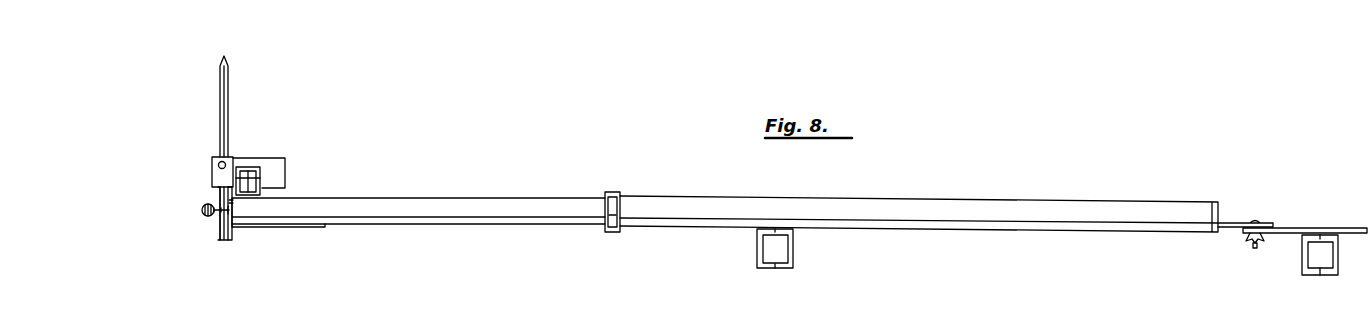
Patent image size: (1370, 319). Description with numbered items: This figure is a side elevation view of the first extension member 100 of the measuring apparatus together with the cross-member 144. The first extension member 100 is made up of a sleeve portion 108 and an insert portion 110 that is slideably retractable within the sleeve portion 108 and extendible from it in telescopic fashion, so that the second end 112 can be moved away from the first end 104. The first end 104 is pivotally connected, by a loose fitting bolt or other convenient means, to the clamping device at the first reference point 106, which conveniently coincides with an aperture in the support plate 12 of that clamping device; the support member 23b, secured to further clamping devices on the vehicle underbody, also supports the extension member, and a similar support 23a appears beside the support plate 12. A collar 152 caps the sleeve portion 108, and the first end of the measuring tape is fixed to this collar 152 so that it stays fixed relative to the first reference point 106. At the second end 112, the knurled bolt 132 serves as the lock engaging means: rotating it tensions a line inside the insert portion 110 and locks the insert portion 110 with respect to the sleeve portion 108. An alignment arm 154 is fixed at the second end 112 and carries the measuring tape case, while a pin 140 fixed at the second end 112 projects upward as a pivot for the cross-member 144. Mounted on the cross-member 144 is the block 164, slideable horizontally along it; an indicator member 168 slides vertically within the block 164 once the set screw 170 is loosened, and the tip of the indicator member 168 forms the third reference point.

The support plate 12 is at (1326, 228).
The clamp block 23a is at (1300, 265).
The support member 23b is at (794, 250).
The first extension member 100 is at (655, 181).
The first end 104 is at (1240, 223).
The first reference point 106 is at (1250, 243).
The sleeve portion 108 is at (907, 201).
The insert portion 110 is at (475, 198).
The second end 112 is at (229, 238).
The knurled bolt 132 is at (203, 205).
The pin 140 is at (258, 167).
The cross-member 144 is at (261, 177).
The collar 152 is at (612, 192).
The alignment arm 154 is at (288, 228).
The block 164 is at (276, 165).
The indicator member 168 is at (229, 92).
The set screw 170 is at (212, 165).